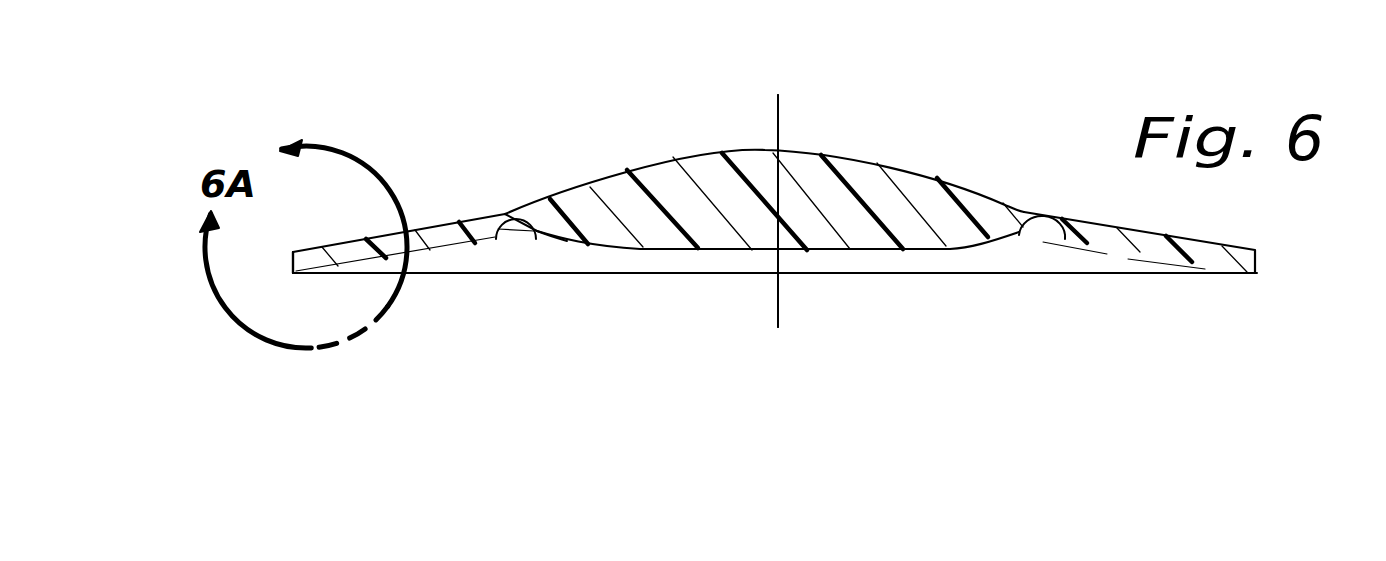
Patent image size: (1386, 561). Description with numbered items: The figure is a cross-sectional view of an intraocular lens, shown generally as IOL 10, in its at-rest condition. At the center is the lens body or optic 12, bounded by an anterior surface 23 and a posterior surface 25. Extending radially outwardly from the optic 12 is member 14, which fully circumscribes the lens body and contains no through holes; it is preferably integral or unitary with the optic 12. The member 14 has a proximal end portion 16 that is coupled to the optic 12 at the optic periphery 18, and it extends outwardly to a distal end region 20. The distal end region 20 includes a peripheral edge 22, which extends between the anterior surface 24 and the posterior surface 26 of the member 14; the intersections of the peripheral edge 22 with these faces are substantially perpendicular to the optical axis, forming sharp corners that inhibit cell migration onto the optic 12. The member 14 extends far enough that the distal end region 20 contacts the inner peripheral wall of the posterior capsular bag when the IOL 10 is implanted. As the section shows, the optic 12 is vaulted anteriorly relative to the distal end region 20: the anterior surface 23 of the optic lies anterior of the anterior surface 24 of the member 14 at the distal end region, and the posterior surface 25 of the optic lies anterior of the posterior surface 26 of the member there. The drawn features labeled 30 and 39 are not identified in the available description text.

The IOL 10 is at (652, 120).
The lens body 12 is at (725, 190).
The member 14 is at (475, 227).
The proximal end portion 16 is at (525, 210).
The optic periphery 18 is at (537, 236).
The distal end region 20 is at (311, 247).
The peripheral edge 22 is at (292, 265).
The anterior surface 23 is at (760, 147).
The anterior surface 24 is at (418, 227).
The posterior surface 25 is at (740, 250).
The posterior surface 26 is at (443, 253).
The rounded bead 30 is at (507, 234).
The axis 39 is at (780, 118).